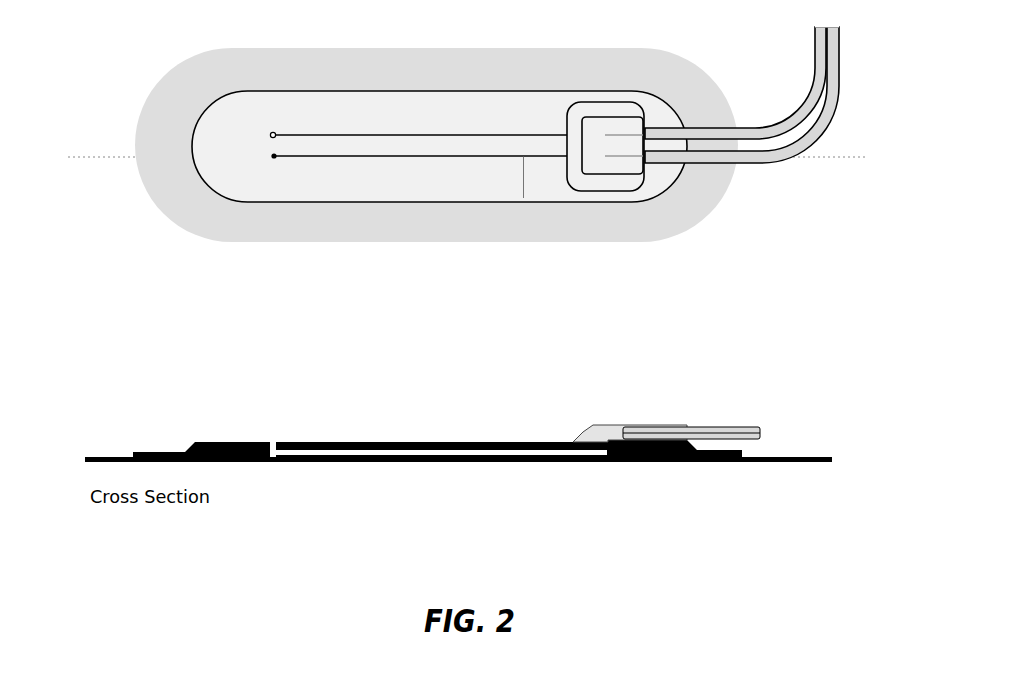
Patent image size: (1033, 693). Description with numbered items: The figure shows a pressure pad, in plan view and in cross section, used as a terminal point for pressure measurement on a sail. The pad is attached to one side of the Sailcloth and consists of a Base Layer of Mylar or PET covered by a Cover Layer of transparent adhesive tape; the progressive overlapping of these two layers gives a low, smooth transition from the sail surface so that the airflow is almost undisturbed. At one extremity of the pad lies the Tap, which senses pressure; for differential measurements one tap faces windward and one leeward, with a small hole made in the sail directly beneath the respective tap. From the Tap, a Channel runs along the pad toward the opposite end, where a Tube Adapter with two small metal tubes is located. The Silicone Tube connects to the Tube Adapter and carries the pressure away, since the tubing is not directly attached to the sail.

The base layer Base Layer is at (228, 174).
The cover layer Cover Layer is at (366, 442).
The channel Channel is at (524, 158).
The tap Tap is at (274, 262).
The pressure tube adapter Tube Adapter is at (612, 176).
The silicone tube Silicone Tube is at (750, 164).
The sailcloth Sailcloth is at (108, 457).